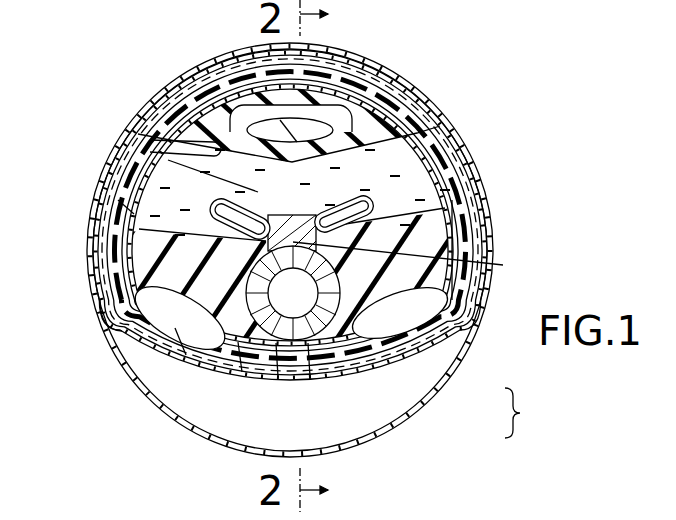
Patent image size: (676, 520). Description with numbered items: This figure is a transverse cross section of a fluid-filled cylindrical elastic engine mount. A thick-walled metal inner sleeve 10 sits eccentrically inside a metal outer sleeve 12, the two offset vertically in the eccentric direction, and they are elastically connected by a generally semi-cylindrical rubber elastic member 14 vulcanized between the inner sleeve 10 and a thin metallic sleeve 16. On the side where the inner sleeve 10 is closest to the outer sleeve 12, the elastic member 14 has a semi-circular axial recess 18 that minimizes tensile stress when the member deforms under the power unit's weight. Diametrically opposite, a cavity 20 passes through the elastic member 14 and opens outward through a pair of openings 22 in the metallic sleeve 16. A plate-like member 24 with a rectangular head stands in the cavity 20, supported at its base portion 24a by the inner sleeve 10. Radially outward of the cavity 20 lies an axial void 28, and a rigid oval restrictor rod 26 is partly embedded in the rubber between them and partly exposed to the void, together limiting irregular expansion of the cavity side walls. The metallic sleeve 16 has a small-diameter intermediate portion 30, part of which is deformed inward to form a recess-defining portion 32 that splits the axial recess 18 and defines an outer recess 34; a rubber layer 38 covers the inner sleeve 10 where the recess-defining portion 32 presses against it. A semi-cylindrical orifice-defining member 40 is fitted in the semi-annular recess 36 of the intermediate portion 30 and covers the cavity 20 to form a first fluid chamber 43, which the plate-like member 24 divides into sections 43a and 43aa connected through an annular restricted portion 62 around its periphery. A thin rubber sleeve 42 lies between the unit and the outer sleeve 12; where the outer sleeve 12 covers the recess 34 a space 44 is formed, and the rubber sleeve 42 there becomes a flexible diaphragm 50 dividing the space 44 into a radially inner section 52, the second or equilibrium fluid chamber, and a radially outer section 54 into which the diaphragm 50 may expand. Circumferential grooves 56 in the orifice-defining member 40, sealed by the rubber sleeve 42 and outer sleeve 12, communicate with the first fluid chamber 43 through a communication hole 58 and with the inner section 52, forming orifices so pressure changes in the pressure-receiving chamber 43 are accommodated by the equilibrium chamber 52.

The inner sleeve 10 is at (316, 289).
The outer sleeve 12 is at (392, 434).
The elastic member 14 is at (160, 244).
The metallic sleeve 16 is at (110, 318).
The axial recess 18 is at (165, 315).
The cavity 20 is at (147, 168).
The openings 22 is at (190, 228).
The plate-like member 24 is at (344, 206).
The base portion 24a is at (420, 259).
The restrictor rod 26 is at (362, 92).
The axial void 28 is at (247, 108).
The axially intermediate portion 30 is at (314, 126).
The recess-defining portion 32 is at (181, 344).
The recess 34 is at (276, 372).
The semi-annular recess 36 is at (218, 88).
The rubber layer 38 is at (310, 366).
The orifice-defining member 40 is at (418, 108).
The rubber sleeve 42 is at (465, 228).
The first fluid chamber 43 is at (307, 200).
The section of first fluid chamber 43a is at (175, 154).
The section of first fluid chamber 43aa is at (166, 206).
The space 44 is at (527, 413).
The flexible diaphragm 50 is at (241, 368).
The radially inner section 52 is at (428, 346).
The radially outer section 54 is at (410, 393).
The circumferential grooves 56 is at (380, 100).
The communication hole 58 is at (118, 200).
The restricted portion 62 is at (412, 197).